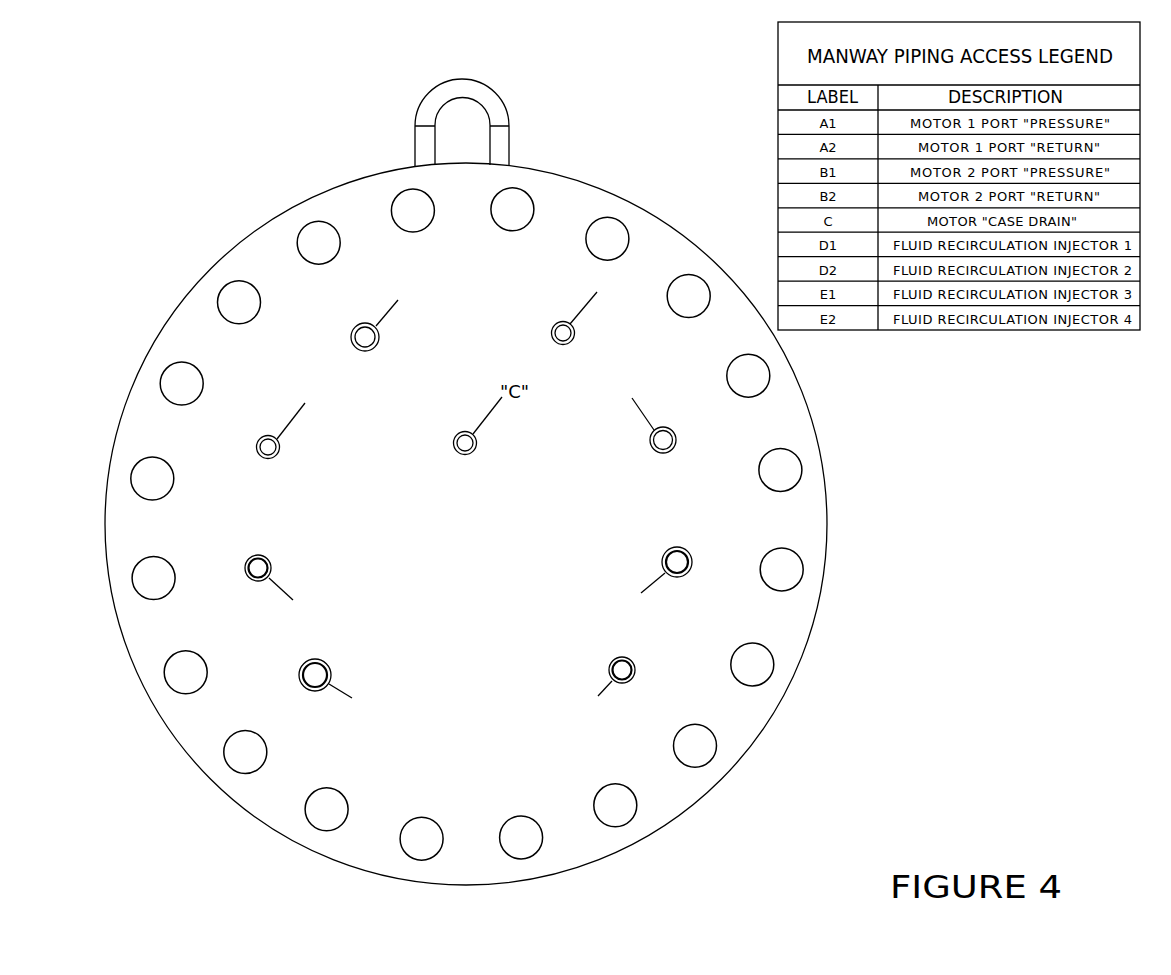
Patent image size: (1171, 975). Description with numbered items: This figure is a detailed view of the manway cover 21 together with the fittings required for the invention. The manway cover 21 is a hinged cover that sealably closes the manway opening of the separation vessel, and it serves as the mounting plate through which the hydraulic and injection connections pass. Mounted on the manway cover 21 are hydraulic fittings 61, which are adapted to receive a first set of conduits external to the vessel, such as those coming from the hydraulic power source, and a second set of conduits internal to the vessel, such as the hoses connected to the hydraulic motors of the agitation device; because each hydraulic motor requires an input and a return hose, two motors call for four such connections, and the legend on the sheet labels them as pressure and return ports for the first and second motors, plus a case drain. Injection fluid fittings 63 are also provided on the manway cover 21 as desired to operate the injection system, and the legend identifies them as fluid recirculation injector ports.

The manway cover 21 is at (353, 178).
The hydraulic fittings 61 is at (356, 324).
The injection fluid fittings 63 is at (244, 573).